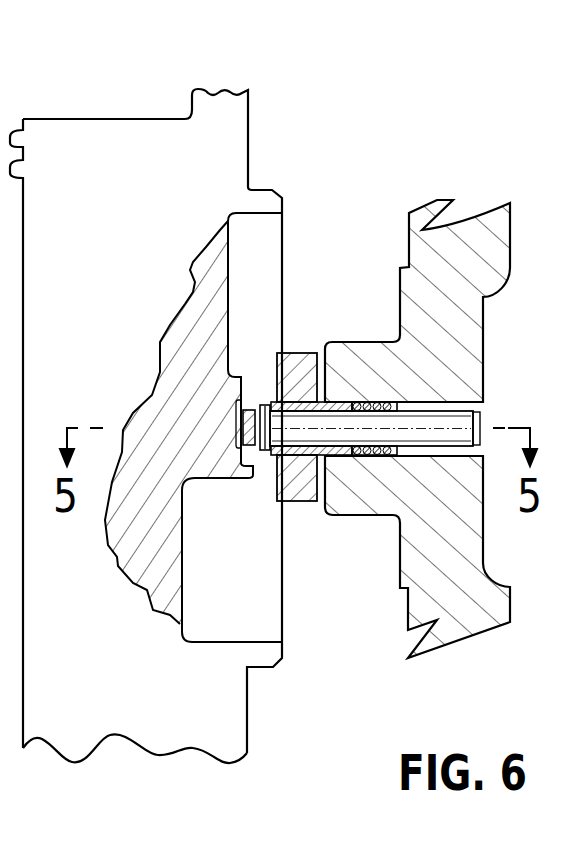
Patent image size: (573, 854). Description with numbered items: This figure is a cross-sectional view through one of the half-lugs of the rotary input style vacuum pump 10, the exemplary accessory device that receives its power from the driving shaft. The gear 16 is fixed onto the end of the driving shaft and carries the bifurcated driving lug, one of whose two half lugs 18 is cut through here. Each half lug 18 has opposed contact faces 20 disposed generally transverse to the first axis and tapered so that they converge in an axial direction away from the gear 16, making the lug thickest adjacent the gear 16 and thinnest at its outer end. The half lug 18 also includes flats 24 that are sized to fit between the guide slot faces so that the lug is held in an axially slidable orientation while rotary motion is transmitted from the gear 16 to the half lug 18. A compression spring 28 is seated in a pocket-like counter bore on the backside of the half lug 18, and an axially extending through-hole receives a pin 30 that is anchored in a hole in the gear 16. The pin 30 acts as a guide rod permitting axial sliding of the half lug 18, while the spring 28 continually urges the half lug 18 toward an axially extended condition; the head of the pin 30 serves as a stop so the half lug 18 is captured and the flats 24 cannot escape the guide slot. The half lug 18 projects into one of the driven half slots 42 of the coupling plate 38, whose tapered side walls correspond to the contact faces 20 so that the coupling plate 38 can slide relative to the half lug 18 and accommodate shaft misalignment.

The vacuum pump 10 is at (253, 85).
The gear 16 is at (510, 243).
The half lug 18 is at (268, 407).
The contact face 20 is at (293, 375).
The flat 24 is at (337, 400).
The compression spring 28 is at (383, 403).
The pin 30 is at (456, 415).
The coupling plate 38 is at (274, 508).
The driven half slot 42 is at (310, 445).